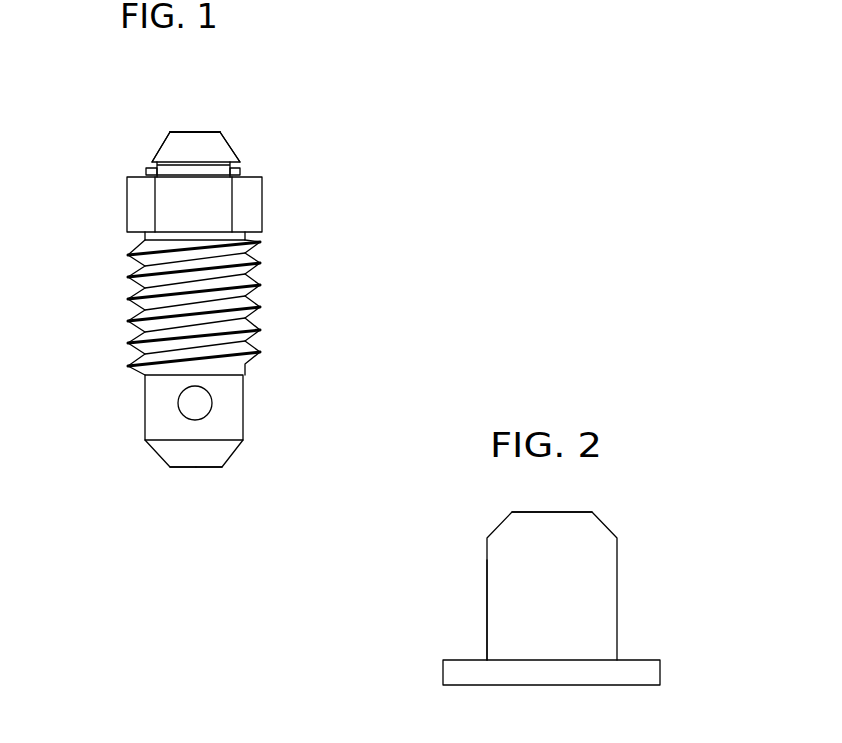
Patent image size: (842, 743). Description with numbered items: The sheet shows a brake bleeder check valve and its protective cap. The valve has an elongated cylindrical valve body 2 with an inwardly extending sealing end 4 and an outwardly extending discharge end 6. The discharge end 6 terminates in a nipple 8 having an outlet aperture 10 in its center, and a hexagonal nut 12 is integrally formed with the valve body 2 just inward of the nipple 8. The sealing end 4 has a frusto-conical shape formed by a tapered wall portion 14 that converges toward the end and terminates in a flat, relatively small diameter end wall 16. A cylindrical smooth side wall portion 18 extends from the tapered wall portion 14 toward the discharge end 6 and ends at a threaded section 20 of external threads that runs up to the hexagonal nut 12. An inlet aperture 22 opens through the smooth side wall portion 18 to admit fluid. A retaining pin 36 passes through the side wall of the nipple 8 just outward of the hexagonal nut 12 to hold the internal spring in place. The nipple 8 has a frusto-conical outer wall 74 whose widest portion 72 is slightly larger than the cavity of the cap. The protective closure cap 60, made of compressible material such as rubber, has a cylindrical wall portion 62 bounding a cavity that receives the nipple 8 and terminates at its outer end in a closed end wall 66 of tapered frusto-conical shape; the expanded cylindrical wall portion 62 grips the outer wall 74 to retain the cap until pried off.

In FIG. 1, the valve body 2 is at (143, 236).
In FIG. 1, the sealing end 4 is at (212, 470).
In FIG. 1, the discharge end 6 is at (203, 132).
In FIG. 1, the nipple 8 is at (160, 150).
In FIG. 1, the outlet aperture 10 is at (188, 132).
In FIG. 1, the hexagonal nut 12 is at (262, 202).
In FIG. 1, the tapered wall portion 14 is at (236, 450).
In FIG. 1, the end wall 16 is at (187, 468).
In FIG. 1, the cylindrical smooth side wall portion 18 is at (145, 403).
In FIG. 1, the threaded section 20 is at (133, 315).
In FIG. 1, the inlet aperture 22 is at (202, 403).
In FIG. 1, the retaining pin 36 is at (146, 172).
In FIG. 1, the widest portion 72 is at (240, 170).
In FIG. 1, the frusto-conical outer wall 74 is at (222, 142).
In FIG. 2, the protective closure cap 60 is at (617, 620).
In FIG. 2, the cylindrical wall portion 62 is at (513, 615).
In FIG. 2, the closed end wall 66 is at (557, 510).